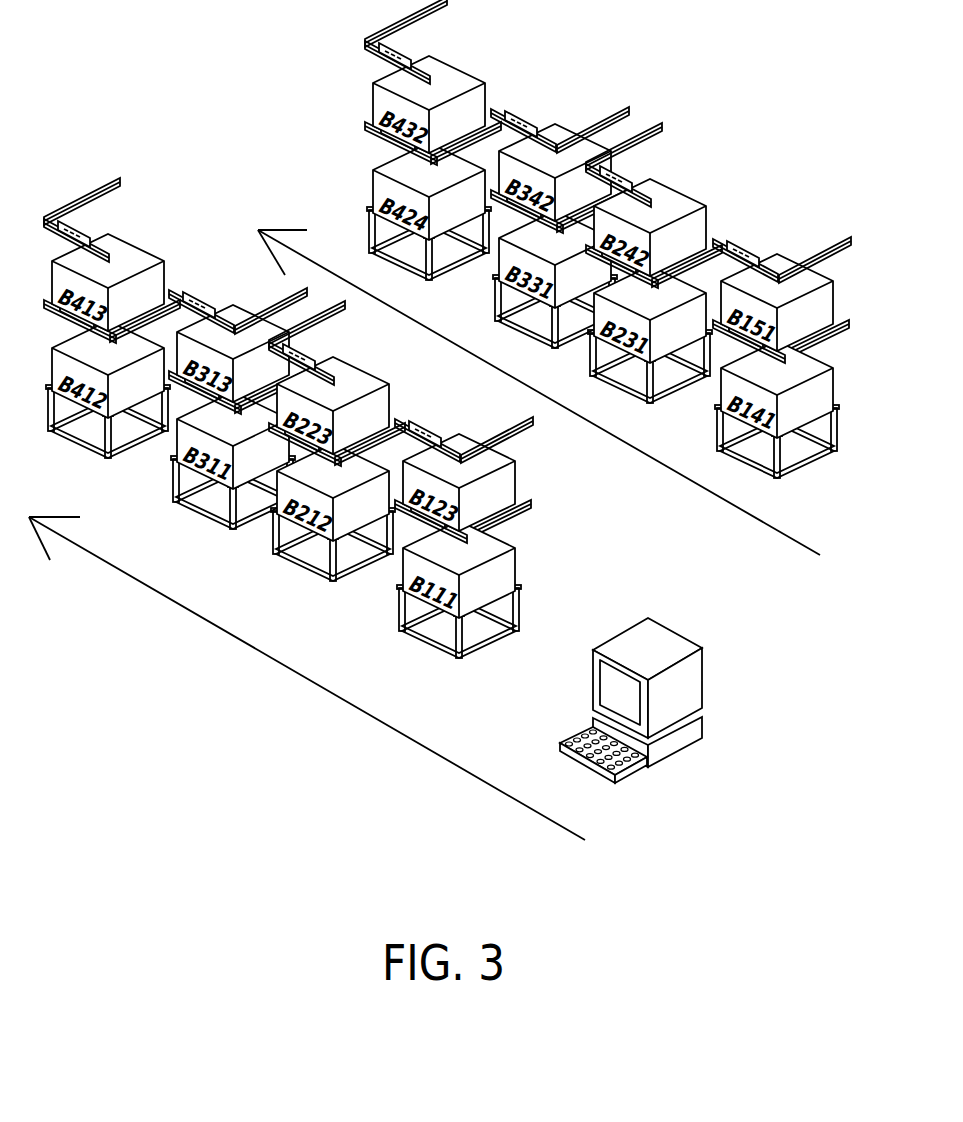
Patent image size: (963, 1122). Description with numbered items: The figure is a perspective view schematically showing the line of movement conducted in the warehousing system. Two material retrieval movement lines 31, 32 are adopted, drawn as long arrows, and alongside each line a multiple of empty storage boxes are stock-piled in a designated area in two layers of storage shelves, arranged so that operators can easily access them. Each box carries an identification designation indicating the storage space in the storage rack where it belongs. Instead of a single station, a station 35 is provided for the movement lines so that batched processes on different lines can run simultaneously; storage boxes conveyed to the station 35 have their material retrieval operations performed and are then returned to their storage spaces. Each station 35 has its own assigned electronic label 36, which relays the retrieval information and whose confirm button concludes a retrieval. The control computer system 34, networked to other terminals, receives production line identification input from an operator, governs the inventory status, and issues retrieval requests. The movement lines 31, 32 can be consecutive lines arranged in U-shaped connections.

The material retrieval movement line 31 is at (307, 678).
The material retrieval movement line 32 is at (539, 392).
The control computer system 34 is at (703, 672).
The station 35 is at (528, 506).
The electronic label 36 is at (86, 232).